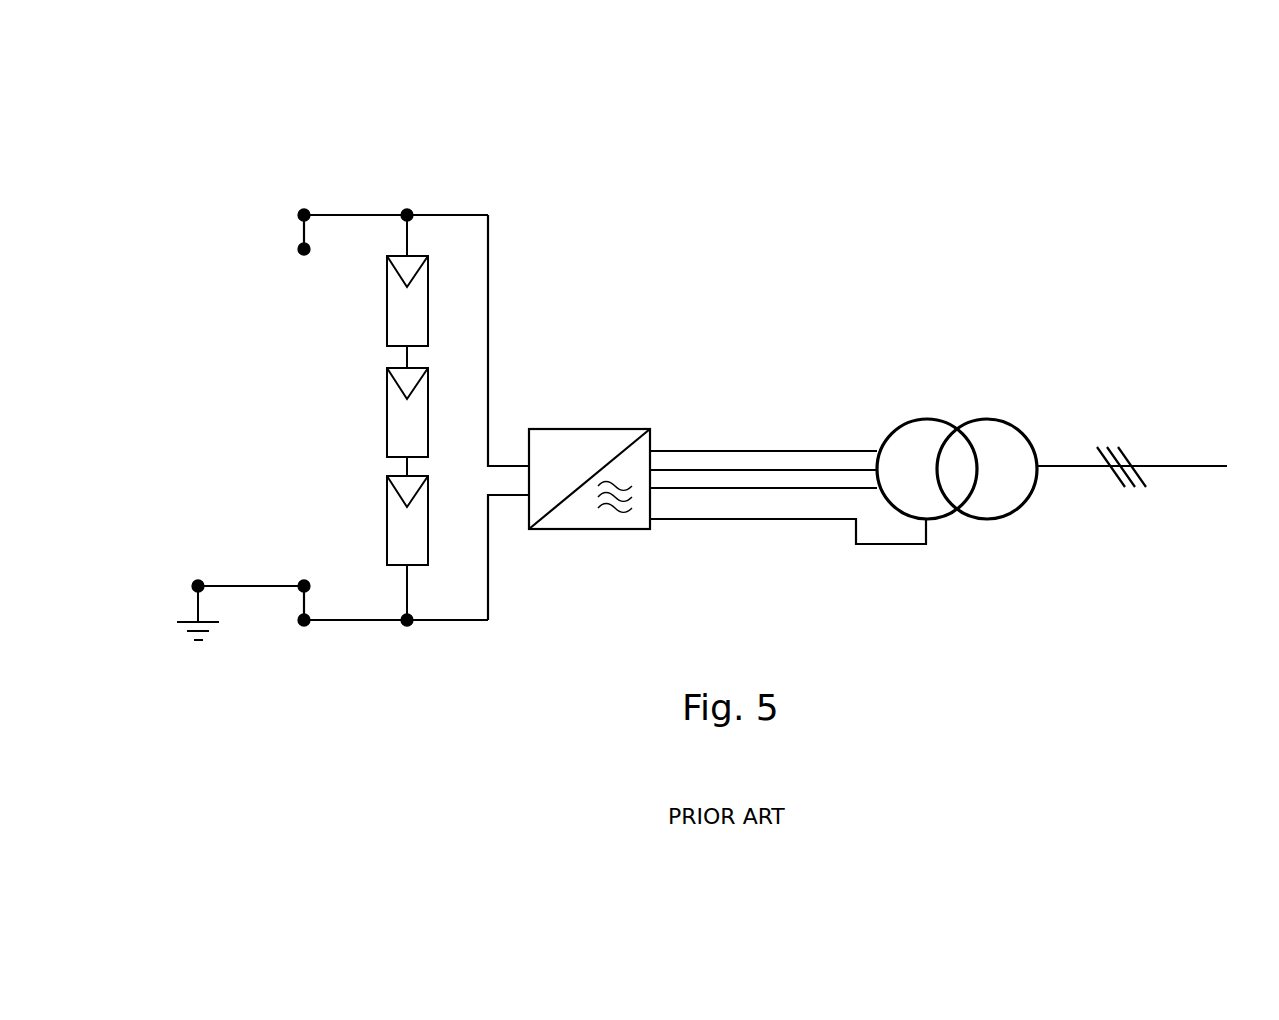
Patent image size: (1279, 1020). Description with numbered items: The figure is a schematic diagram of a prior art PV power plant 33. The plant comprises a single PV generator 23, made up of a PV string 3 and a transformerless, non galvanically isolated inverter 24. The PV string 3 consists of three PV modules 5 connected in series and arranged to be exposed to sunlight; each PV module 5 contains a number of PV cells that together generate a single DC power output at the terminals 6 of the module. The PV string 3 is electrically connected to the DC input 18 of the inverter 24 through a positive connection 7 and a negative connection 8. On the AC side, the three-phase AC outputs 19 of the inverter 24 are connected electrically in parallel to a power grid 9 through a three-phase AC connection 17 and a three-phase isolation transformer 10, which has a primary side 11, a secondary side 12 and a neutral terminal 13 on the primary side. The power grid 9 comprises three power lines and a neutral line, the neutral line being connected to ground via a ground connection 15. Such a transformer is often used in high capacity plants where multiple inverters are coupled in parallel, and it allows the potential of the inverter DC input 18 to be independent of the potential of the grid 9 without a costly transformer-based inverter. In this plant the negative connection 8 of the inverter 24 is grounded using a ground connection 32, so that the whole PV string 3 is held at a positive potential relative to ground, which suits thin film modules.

The PV string 3 is at (298, 192).
The PV module 5 is at (387, 291).
The terminals 6 is at (408, 232).
The positive connection 7 is at (490, 432).
The negative connection 8 is at (491, 528).
The power grid 9 is at (1190, 465).
The three-phase isolation transformer 10 is at (1067, 369).
The primary side 11 is at (927, 419).
The secondary side 12 is at (988, 419).
The neutral terminal 13 is at (927, 537).
The ground connection 15 is at (187, 613).
The three-phase AC connection 17 is at (770, 441).
The DC input 18 is at (521, 458).
The three-phase AC output 19 is at (653, 482).
The PV generator 23 is at (608, 388).
The inverter 24 is at (607, 427).
The ground connection 32 is at (198, 578).
The power plant 33 is at (230, 753).